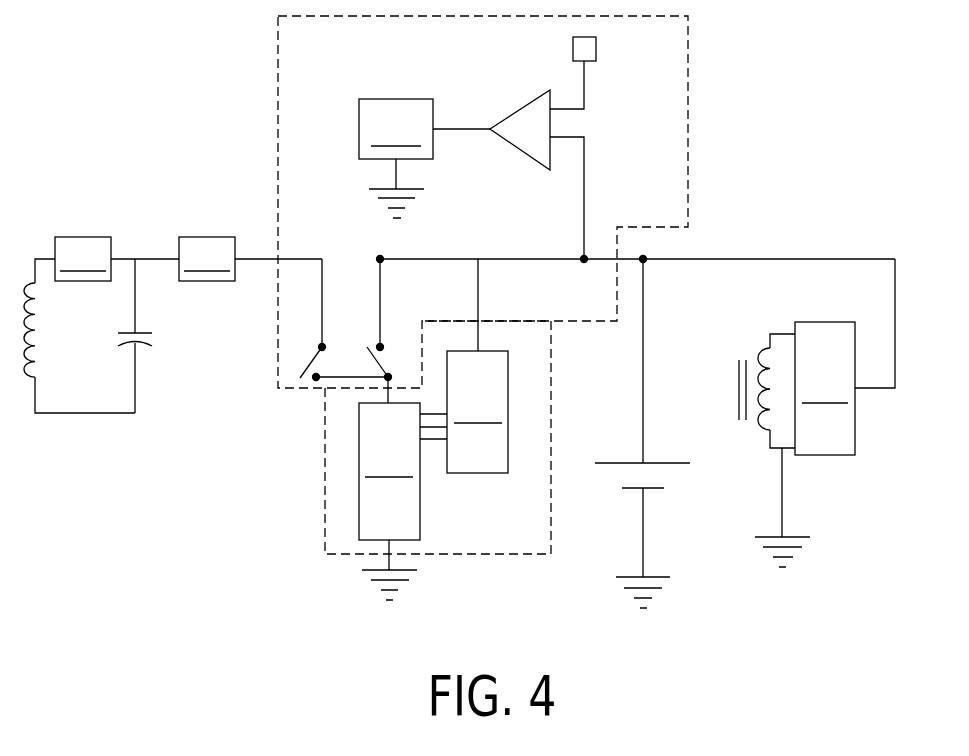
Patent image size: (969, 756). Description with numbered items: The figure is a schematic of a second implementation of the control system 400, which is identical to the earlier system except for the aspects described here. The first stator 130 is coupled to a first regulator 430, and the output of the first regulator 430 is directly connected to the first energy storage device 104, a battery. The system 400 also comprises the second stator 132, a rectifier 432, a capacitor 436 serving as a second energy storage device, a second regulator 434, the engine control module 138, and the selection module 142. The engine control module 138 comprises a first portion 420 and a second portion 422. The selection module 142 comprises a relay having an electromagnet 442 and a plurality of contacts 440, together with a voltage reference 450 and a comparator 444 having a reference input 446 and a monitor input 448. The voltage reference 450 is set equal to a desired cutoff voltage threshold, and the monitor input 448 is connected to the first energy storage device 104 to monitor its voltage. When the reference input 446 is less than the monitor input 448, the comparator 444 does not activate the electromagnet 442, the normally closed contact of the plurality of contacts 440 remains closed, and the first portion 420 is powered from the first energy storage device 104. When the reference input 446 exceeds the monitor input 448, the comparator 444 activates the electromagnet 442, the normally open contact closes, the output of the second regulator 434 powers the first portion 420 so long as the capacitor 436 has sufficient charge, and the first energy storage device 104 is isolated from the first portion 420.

The system 400 is at (797, 135).
The selection module 142 is at (278, 79).
The engine control module 138 is at (480, 556).
The rectifier 432 is at (83, 259).
The second regulator 434 is at (207, 259).
The second stator 132 is at (37, 333).
The capacitor 436 is at (143, 345).
The plurality of contacts 440 is at (342, 378).
The first portion 420 is at (403, 501).
The second portion 422 is at (477, 366).
The electromagnet 442 is at (424, 158).
The comparator 444 is at (527, 107).
The reference input 446 is at (585, 97).
The monitor input 448 is at (585, 212).
The voltage reference 450 is at (597, 48).
The first energy storage device 104 is at (647, 433).
The first regulator 430 is at (825, 388).
The first stator 130 is at (756, 453).